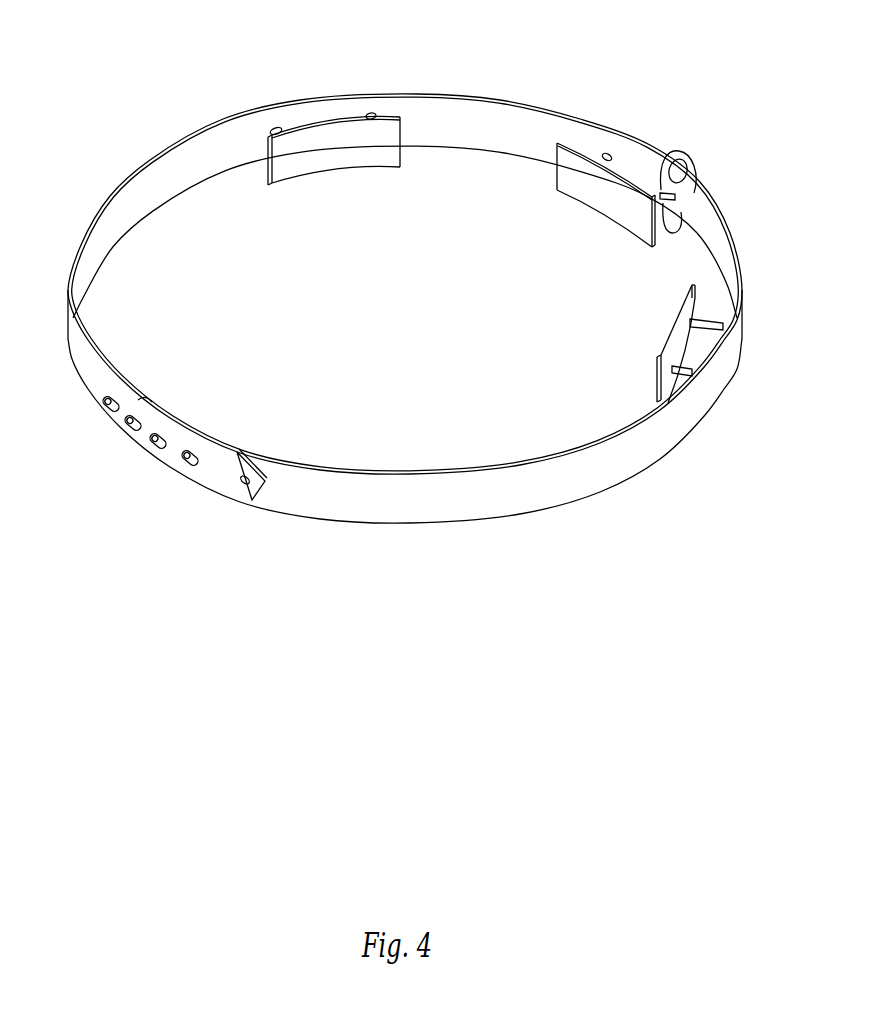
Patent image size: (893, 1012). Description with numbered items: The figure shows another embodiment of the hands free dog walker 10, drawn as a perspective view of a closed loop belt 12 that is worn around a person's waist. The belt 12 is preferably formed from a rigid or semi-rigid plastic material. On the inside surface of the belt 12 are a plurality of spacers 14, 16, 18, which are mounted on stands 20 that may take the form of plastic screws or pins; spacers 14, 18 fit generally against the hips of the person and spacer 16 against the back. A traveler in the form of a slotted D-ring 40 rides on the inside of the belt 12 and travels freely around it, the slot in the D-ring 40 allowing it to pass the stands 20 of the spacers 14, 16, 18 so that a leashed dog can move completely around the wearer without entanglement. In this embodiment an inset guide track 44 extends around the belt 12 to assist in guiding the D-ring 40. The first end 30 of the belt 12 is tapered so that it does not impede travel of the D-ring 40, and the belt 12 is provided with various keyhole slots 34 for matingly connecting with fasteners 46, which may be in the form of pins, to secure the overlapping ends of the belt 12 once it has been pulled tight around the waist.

The hands free dog walker 10 is at (229, 41).
The belt 12 is at (458, 510).
The spacer 14 is at (338, 166).
The spacer 16 is at (582, 193).
The spacer 18 is at (682, 322).
The stands 20 is at (270, 126).
The first end 30 is at (252, 498).
The keyhole slots 34 is at (102, 403).
The slotted D-ring 40 is at (689, 162).
The inset guide track 44 is at (157, 190).
The fasteners 46 is at (152, 402).